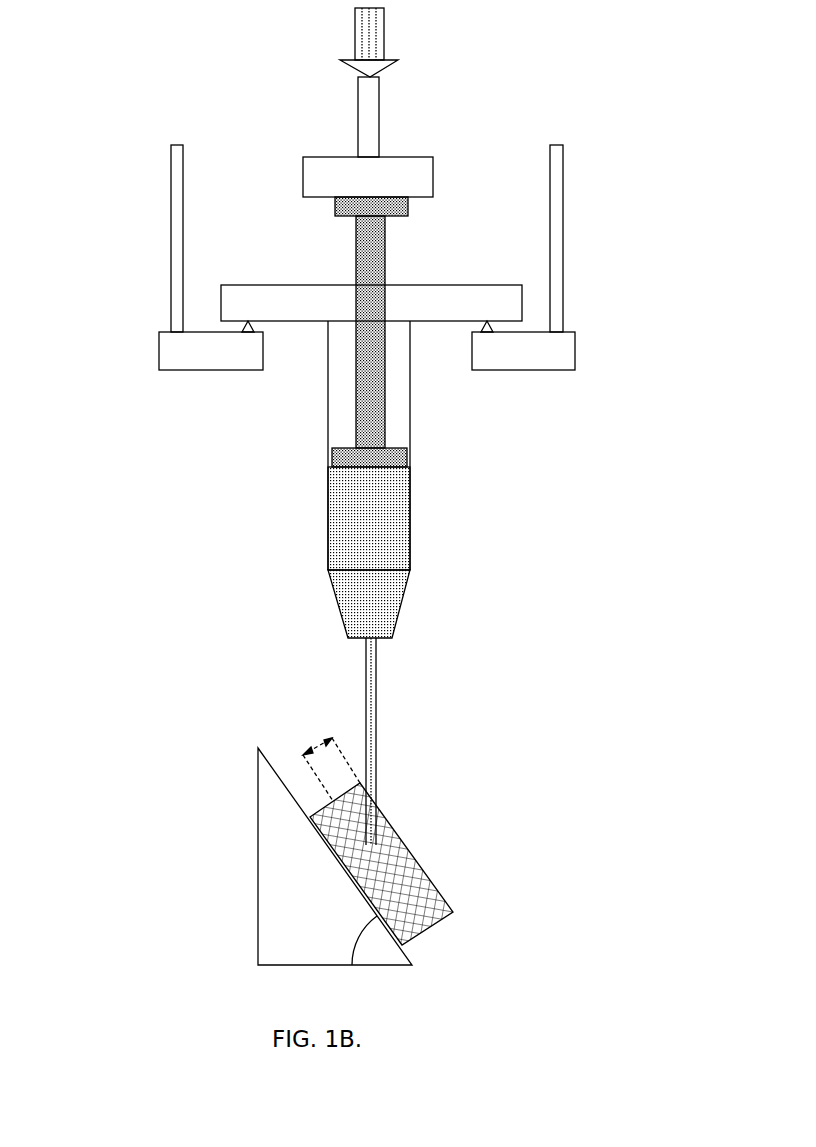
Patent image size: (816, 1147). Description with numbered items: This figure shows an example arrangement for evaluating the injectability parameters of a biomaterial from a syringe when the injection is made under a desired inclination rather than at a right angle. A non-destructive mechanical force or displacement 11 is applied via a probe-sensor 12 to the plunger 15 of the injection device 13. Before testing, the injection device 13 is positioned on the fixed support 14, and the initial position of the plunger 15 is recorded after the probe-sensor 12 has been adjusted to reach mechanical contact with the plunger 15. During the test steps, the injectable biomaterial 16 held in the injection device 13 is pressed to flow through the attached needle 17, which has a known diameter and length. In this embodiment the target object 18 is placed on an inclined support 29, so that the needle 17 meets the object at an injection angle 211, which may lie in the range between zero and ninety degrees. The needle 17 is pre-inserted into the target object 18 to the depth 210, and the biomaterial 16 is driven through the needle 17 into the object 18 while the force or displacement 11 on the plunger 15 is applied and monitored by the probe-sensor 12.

The mechanical force or displacement 11 is at (385, 33).
The probe-sensor 12 is at (368, 177).
The injection device 13 is at (410, 307).
The fixed support 14 is at (367, 257).
The plunger 15 is at (368, 257).
The injectable biomaterial 16 is at (328, 552).
The needle 17 is at (365, 707).
The target object 18 is at (407, 852).
The inclined support 29 is at (280, 865).
The depth 210 is at (313, 742).
The injection angle 211 is at (350, 937).